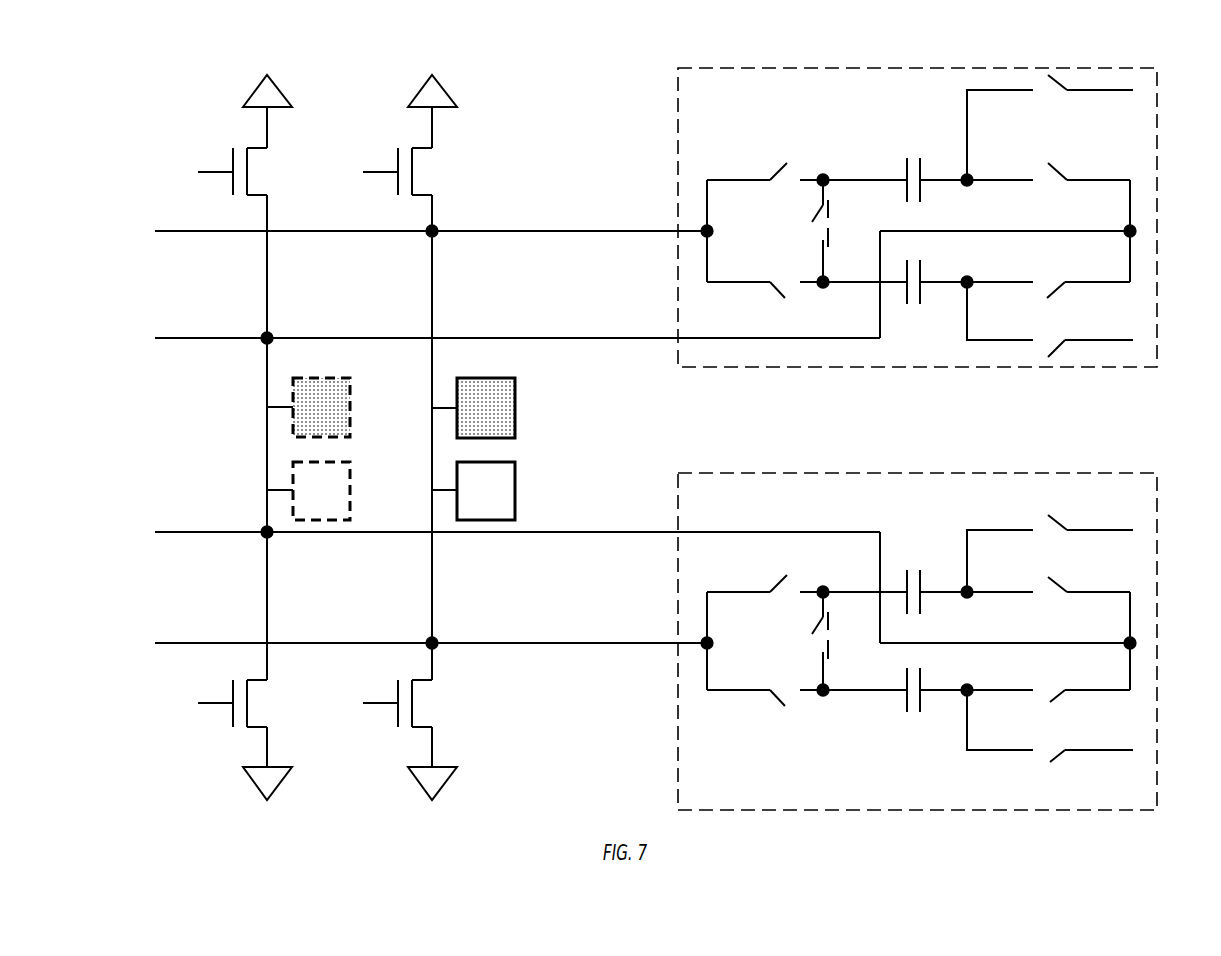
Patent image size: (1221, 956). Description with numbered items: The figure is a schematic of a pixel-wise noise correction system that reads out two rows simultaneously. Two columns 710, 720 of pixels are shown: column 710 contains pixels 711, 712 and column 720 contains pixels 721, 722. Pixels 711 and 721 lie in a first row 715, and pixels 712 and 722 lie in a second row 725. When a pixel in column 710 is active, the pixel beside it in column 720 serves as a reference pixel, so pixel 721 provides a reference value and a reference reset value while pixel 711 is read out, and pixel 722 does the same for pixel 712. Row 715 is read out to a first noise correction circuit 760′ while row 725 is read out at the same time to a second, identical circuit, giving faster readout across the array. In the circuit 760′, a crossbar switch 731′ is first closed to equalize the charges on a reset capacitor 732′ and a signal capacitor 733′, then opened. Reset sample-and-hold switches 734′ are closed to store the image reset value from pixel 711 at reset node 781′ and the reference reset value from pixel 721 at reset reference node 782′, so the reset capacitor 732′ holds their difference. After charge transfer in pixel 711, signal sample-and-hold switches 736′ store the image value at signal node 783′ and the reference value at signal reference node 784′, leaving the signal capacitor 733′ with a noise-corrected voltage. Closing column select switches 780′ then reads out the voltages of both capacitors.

The column 710 is at (457, 72).
The column 720 is at (292, 72).
The pixel 711 is at (517, 375).
The pixel 712 is at (517, 457).
The pixel 721 is at (357, 373).
The pixel 722 is at (357, 455).
The first row 715 is at (245, 377).
The second row 725 is at (245, 458).
The noise correction circuit 760′ is at (947, 202).
The crossbar switch 731′ is at (810, 202).
The reset capacitor 732′ is at (930, 153).
The signal capacitor 733′ is at (930, 305).
The reset sample-and-hold switch 734′ is at (800, 161).
The signal sample-and-hold switch 736′ is at (800, 278).
The column select switch 780′ is at (1063, 98).
The reset node 781′ is at (823, 177).
The reset reference node 782′ is at (967, 185).
The signal node 783′ is at (825, 287).
The signal reference node 784′ is at (968, 278).